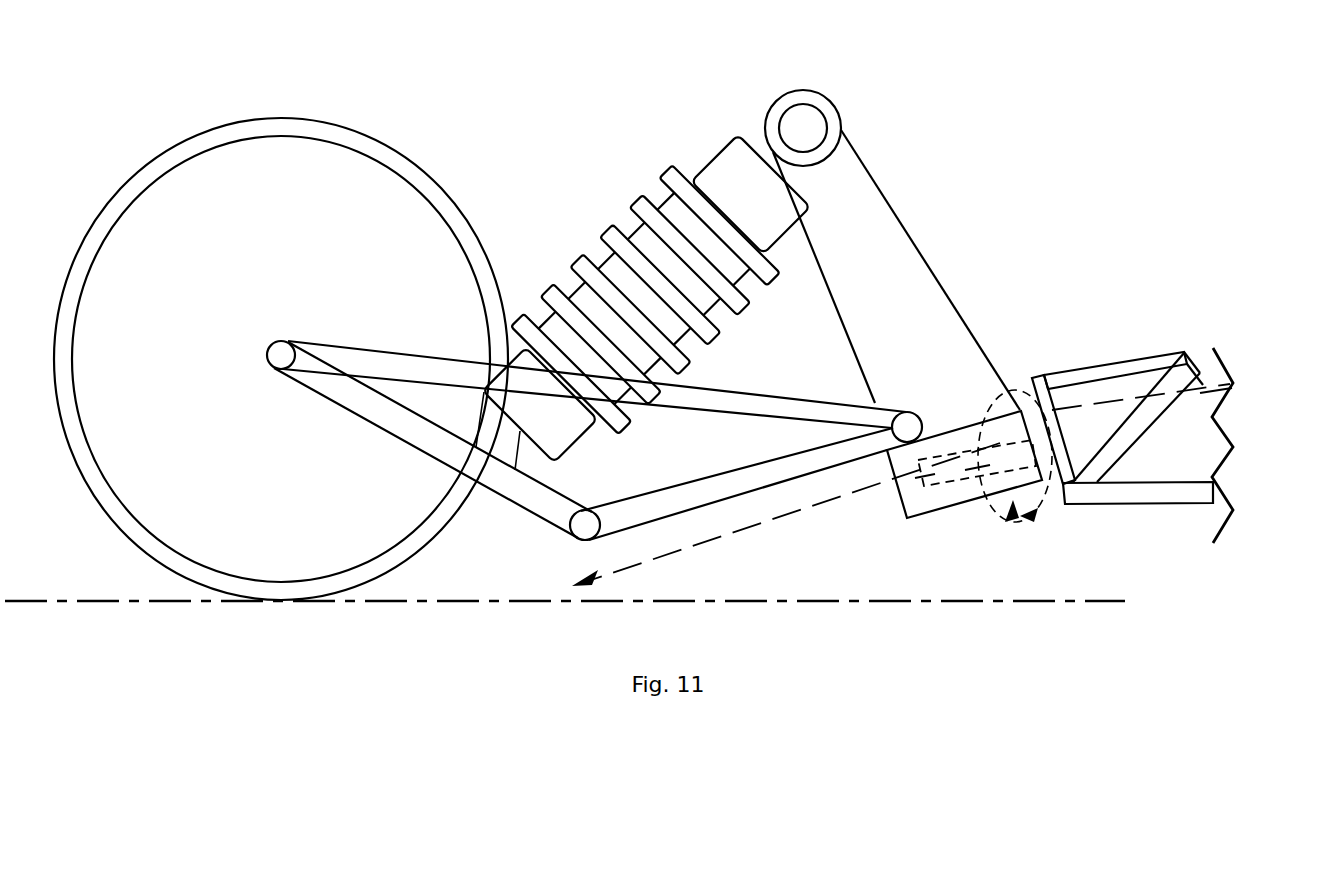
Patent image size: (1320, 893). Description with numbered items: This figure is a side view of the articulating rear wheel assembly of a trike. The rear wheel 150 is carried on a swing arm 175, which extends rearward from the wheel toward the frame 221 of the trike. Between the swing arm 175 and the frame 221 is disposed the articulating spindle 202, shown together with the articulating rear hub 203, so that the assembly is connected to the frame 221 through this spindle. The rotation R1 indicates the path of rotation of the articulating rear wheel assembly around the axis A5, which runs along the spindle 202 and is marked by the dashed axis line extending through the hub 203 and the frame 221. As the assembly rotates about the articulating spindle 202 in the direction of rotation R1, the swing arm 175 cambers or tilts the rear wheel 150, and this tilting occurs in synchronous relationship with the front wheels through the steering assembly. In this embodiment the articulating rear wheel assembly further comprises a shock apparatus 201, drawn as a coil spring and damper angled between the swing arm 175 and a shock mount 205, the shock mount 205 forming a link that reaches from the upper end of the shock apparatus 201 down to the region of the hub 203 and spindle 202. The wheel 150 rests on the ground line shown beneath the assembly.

The rear wheel 150 is at (157, 154).
The swing arm 175 is at (428, 370).
The shock apparatus 201 is at (630, 232).
The shock mount 205 is at (868, 237).
The articulating rear hub 203 is at (938, 508).
The articulating spindle 202 is at (972, 480).
The frame 221 is at (1115, 362).
The rotation R1 is at (1047, 514).
The axis A5 is at (1318, 357).